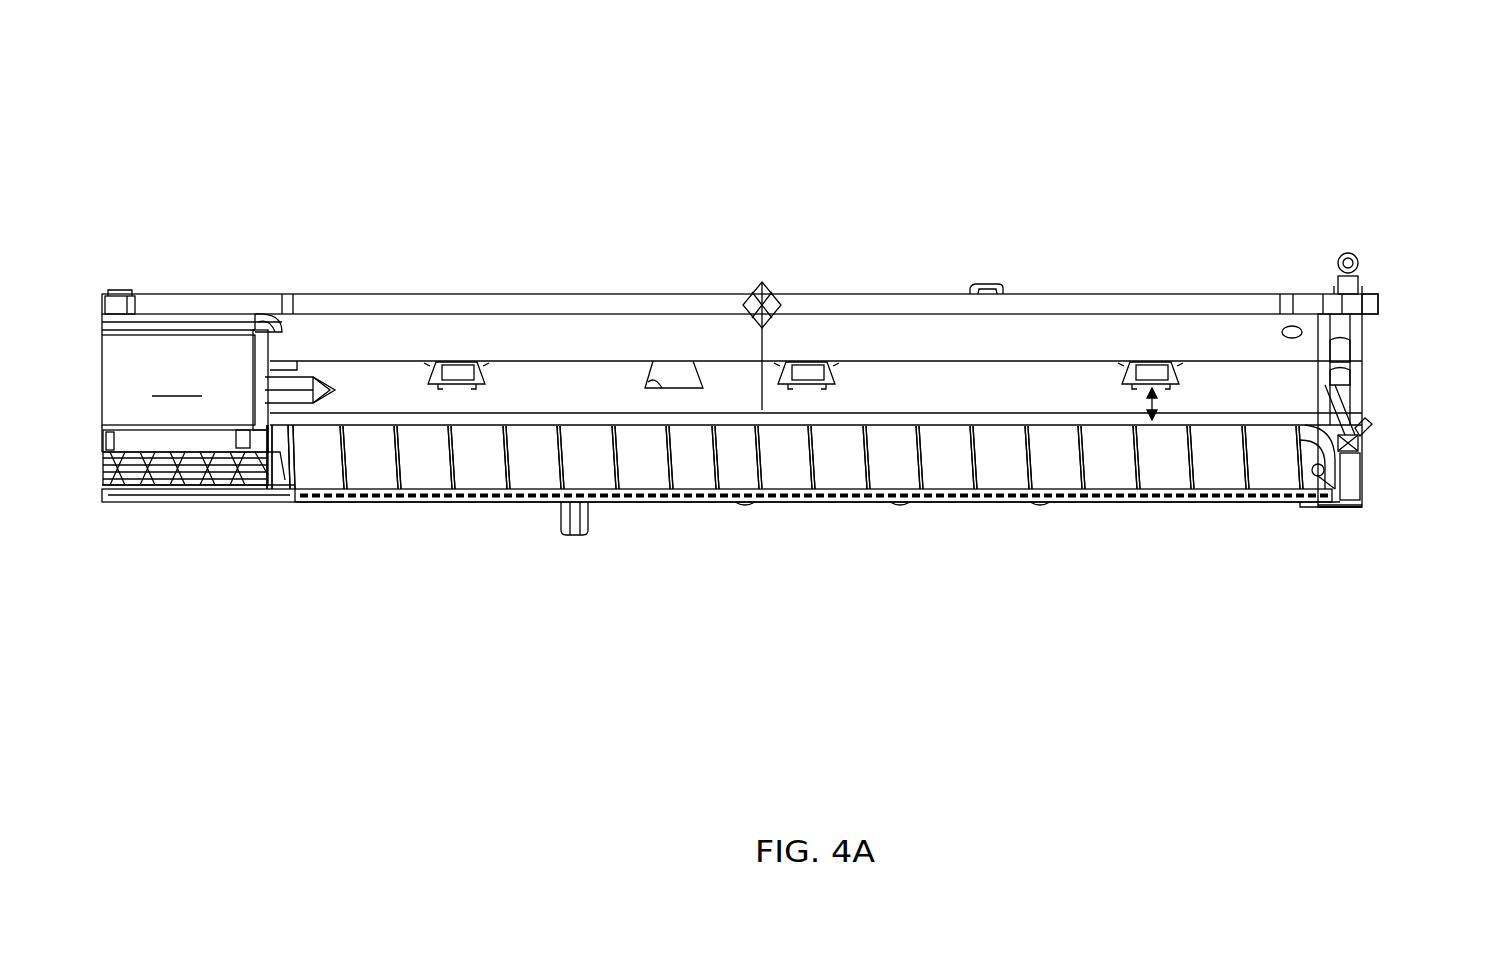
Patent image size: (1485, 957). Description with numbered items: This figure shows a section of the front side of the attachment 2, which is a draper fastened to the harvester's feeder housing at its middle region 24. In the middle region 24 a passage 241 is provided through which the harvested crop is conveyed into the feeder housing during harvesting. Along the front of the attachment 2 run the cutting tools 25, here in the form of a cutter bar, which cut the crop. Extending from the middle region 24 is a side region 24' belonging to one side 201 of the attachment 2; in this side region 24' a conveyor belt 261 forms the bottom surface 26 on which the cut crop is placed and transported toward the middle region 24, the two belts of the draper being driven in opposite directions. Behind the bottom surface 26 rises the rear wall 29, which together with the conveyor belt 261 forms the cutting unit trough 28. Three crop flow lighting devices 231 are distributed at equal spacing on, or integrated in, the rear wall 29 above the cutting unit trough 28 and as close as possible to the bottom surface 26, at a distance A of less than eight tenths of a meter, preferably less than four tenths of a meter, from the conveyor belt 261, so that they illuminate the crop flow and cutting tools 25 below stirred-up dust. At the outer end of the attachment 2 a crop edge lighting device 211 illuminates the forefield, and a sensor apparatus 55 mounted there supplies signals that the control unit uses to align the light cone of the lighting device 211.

The attachment 2 is at (748, 190).
The rear wall 29 is at (333, 300).
The lighting device 231 is at (458, 362).
The passage 241 is at (193, 397).
The middle region 24 is at (185, 519).
The side region 24' is at (717, 540).
The conveyor belt 261 is at (528, 470).
The bottom surface 26 is at (785, 457).
The cutting tools 25 is at (1110, 503).
The distance A is at (1152, 400).
The cutting unit trough 28 is at (1247, 387).
The lighting device 211 is at (1352, 252).
The sensor apparatus 55 is at (1380, 305).
The side 201 is at (1358, 545).